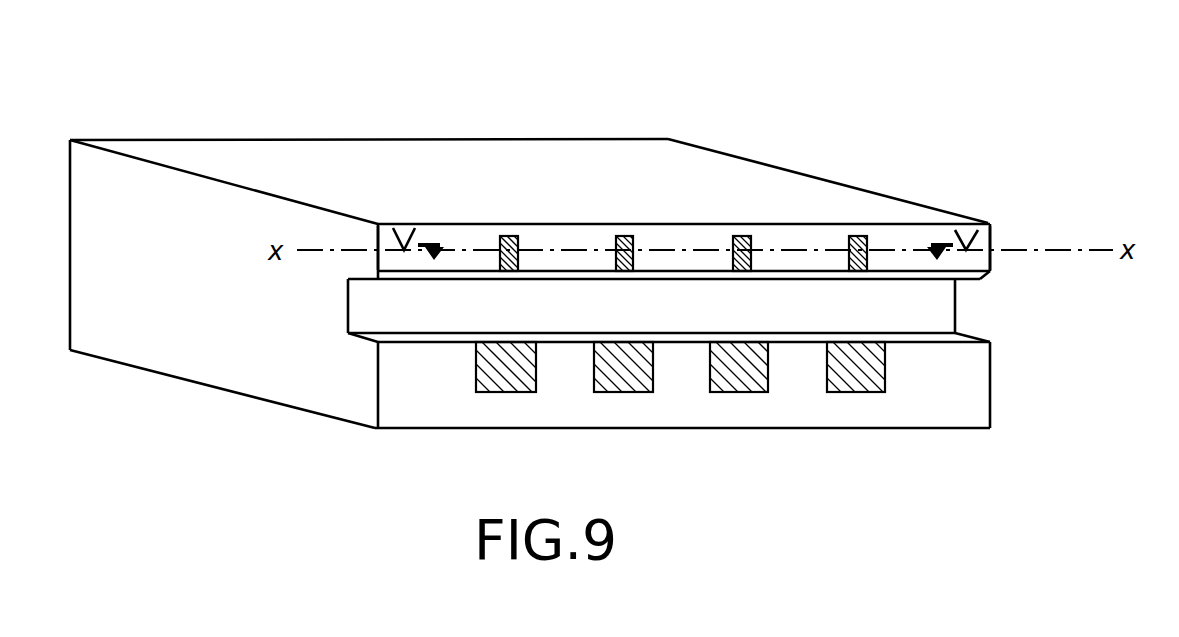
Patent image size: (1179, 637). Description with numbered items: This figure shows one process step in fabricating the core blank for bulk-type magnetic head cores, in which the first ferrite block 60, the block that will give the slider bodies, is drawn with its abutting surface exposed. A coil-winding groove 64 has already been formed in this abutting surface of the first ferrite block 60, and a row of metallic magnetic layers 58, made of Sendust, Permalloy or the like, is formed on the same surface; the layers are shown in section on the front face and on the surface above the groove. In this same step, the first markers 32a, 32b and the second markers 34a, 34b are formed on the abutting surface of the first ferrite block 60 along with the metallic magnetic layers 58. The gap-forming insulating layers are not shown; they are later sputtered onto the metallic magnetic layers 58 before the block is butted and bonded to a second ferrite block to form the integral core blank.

The first ferrite block 60 is at (206, 106).
The coil-winding groove 64 is at (410, 318).
The metallic magnetic layer 58 is at (513, 236).
The first marker 32a is at (388, 239).
The first marker 32b is at (982, 238).
The second marker 34a is at (438, 230).
The second marker 34b is at (940, 225).